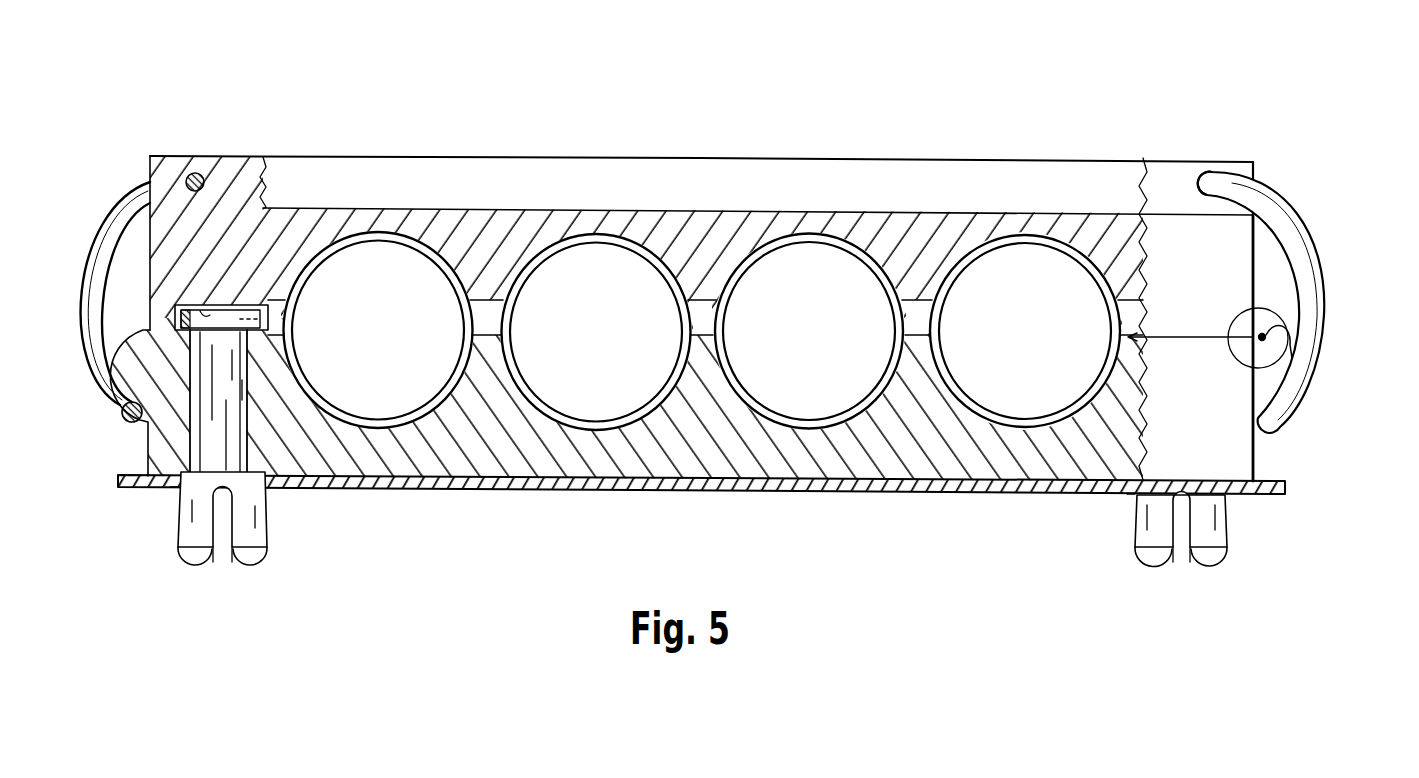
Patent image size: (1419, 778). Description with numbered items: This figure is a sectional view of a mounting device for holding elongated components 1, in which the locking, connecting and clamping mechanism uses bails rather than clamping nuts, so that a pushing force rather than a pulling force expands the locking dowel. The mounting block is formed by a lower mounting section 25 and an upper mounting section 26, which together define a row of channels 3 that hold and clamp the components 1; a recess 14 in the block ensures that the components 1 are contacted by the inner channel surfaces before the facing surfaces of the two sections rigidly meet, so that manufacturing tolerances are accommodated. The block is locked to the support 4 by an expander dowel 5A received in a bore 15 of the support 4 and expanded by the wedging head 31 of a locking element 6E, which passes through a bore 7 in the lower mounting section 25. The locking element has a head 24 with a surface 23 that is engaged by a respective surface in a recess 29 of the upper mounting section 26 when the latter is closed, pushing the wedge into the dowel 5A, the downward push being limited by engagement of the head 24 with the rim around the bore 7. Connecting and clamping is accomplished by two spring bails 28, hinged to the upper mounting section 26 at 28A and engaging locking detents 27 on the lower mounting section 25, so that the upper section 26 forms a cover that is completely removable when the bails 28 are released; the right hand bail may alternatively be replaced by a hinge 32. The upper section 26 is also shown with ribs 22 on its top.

The component 1 is at (369, 338).
The channel 3 is at (390, 426).
The support 4 is at (668, 490).
The expander dowel 5A is at (265, 525).
The pin 6E is at (205, 428).
The bore 7 is at (250, 392).
The recess 14 is at (483, 318).
The bore 15 is at (172, 487).
The ribs 22 is at (510, 157).
The surface 23 is at (208, 308).
The head 24 is at (187, 318).
The lower mounting section 25 is at (478, 455).
The upper mounting section 26 is at (240, 157).
The locking detent 27 is at (118, 378).
The spring bail 28 is at (98, 255).
The hinge point of spring bail 28A is at (195, 172).
The recess 29 is at (178, 330).
The wedging head 31 is at (222, 527).
The hinge 32 is at (1300, 328).